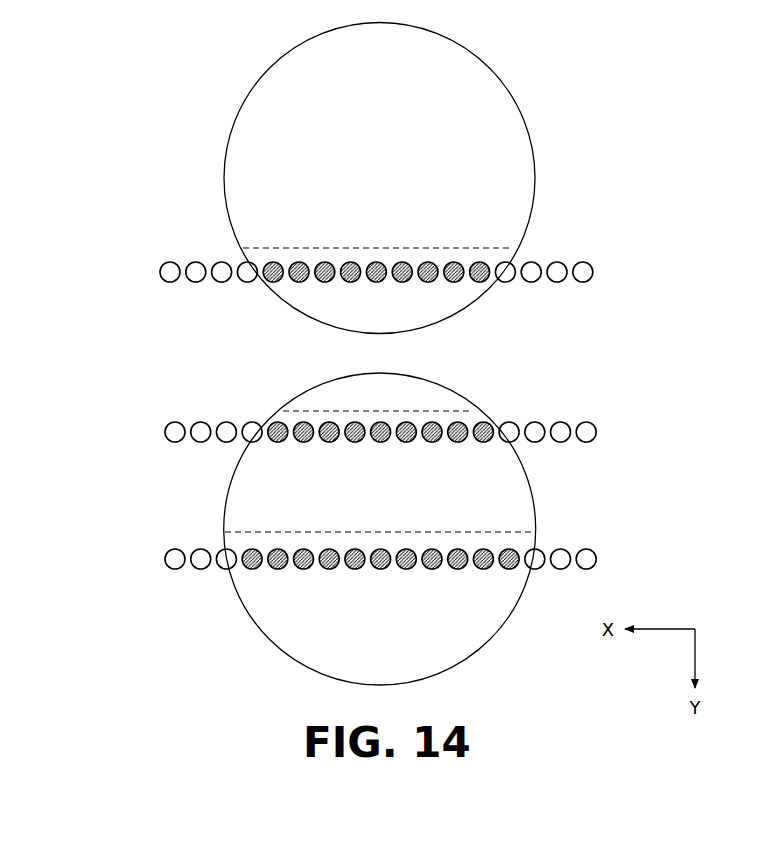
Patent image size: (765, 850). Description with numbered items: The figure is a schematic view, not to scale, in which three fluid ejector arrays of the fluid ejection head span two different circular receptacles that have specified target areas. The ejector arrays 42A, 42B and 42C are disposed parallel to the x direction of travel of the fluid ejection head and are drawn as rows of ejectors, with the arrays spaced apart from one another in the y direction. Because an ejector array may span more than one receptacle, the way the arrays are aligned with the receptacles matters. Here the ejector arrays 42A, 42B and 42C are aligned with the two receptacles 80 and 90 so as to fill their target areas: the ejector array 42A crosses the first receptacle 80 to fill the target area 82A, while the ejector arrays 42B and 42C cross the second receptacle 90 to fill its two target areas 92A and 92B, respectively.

The receptacle 80 is at (541, 97).
The target area 82A is at (363, 315).
The receptacle 90 is at (523, 398).
The target area 92A is at (364, 493).
The target area 92B is at (364, 607).
The ejector array 42A is at (150, 272).
The ejector array 42B is at (150, 433).
The ejector array 42C is at (150, 558).